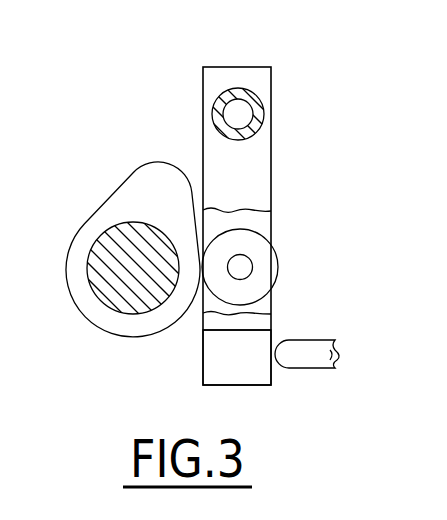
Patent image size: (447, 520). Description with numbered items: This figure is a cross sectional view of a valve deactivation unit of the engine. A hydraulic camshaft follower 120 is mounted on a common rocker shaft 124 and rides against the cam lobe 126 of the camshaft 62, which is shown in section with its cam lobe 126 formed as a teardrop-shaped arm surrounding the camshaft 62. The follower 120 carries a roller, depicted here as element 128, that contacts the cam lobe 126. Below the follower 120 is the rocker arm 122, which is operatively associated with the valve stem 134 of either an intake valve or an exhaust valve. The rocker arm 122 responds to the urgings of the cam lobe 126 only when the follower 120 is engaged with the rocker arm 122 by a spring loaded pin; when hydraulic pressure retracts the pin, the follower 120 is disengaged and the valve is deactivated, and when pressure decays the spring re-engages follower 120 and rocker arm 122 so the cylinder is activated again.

The hydraulic camshaft follower 120 is at (203, 67).
The rocker arm 122 is at (207, 362).
The rocker shaft 124 is at (265, 105).
The cam lobe 126 is at (119, 175).
The pulley 128 is at (278, 250).
The valve stem 134 is at (336, 325).
The camshaft 62 is at (135, 310).